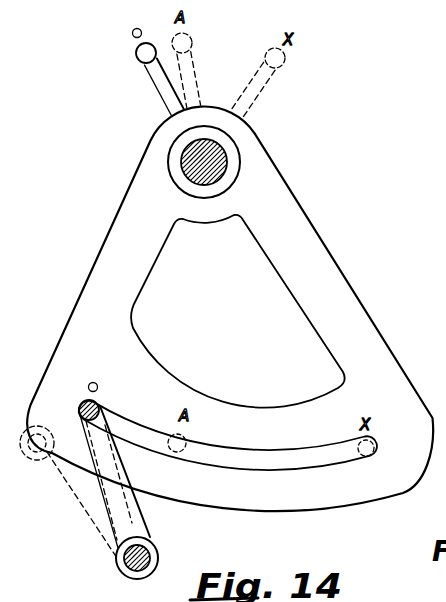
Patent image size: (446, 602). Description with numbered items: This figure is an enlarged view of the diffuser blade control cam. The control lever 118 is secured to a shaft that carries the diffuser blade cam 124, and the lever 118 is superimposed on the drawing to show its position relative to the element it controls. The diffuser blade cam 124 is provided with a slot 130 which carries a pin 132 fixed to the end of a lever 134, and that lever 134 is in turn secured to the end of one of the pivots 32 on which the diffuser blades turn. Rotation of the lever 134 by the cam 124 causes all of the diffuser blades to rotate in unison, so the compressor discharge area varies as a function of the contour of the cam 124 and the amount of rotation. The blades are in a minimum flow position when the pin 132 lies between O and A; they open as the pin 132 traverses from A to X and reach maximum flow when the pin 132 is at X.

The control lever 118 is at (136, 55).
The diffuser blade cam 124 is at (322, 258).
The slot 130 is at (308, 455).
The pin 132 is at (100, 404).
The lever 134 is at (130, 515).
The pivot 32 is at (127, 561).